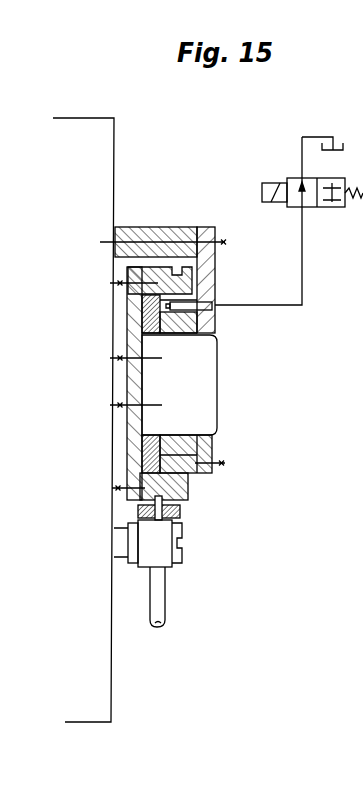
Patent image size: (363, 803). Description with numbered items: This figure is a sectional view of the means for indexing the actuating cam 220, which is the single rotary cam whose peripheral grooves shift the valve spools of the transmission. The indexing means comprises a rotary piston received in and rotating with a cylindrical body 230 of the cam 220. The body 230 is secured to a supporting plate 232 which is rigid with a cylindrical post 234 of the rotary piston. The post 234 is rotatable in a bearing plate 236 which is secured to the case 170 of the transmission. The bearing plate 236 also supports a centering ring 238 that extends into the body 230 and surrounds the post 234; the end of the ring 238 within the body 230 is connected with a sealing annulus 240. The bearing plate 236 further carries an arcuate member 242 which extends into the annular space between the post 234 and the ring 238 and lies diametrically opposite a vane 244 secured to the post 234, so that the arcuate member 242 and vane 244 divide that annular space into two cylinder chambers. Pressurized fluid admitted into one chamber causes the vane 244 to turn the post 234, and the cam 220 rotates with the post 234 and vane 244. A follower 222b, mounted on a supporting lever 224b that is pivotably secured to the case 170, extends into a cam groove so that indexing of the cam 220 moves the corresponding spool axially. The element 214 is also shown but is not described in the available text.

The case 170 is at (97, 138).
The rotary cam 220 is at (152, 262).
The cylindrical body 230 is at (128, 284).
The supporting plate 232 is at (137, 313).
The sealing annulus 240 is at (140, 332).
The centering ring 238 is at (200, 297).
The vane 244 is at (187, 327).
The cylindrical post 234 is at (190, 395).
The bearing plate 236 is at (208, 443).
The arcuate member 242 is at (140, 432).
The supporting lever 224b is at (160, 510).
The follower 222b is at (178, 518).
The rod 214 is at (158, 605).